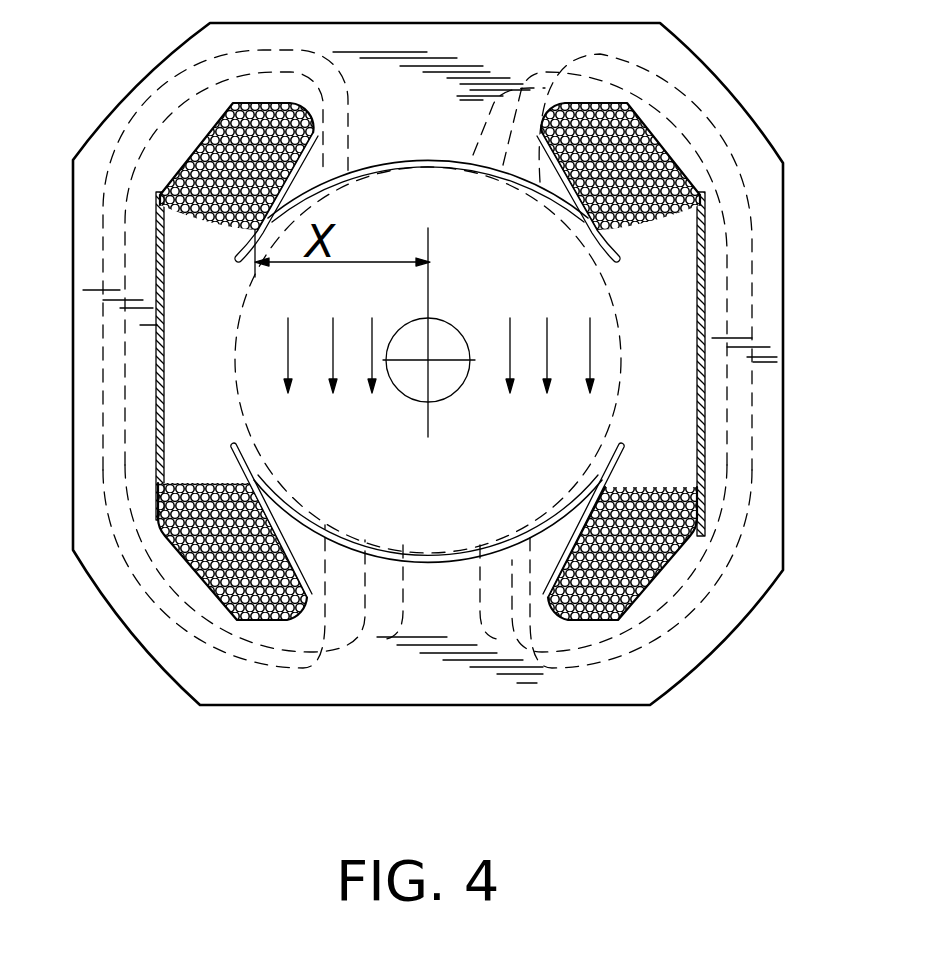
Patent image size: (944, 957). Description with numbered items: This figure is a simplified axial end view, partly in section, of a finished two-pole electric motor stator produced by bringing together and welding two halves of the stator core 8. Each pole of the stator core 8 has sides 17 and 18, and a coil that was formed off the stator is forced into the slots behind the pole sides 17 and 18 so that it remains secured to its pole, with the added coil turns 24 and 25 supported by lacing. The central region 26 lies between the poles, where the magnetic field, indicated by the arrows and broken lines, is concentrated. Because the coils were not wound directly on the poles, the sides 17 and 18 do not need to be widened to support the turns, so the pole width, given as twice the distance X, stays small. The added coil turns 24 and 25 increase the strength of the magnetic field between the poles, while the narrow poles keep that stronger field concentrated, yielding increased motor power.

The stator core 8 is at (767, 543).
The pole side 17 is at (312, 196).
The pole side 18 is at (297, 515).
The added coil turns 24 is at (202, 258).
The added coil turns 25 is at (200, 460).
The central bore 26 is at (430, 314).